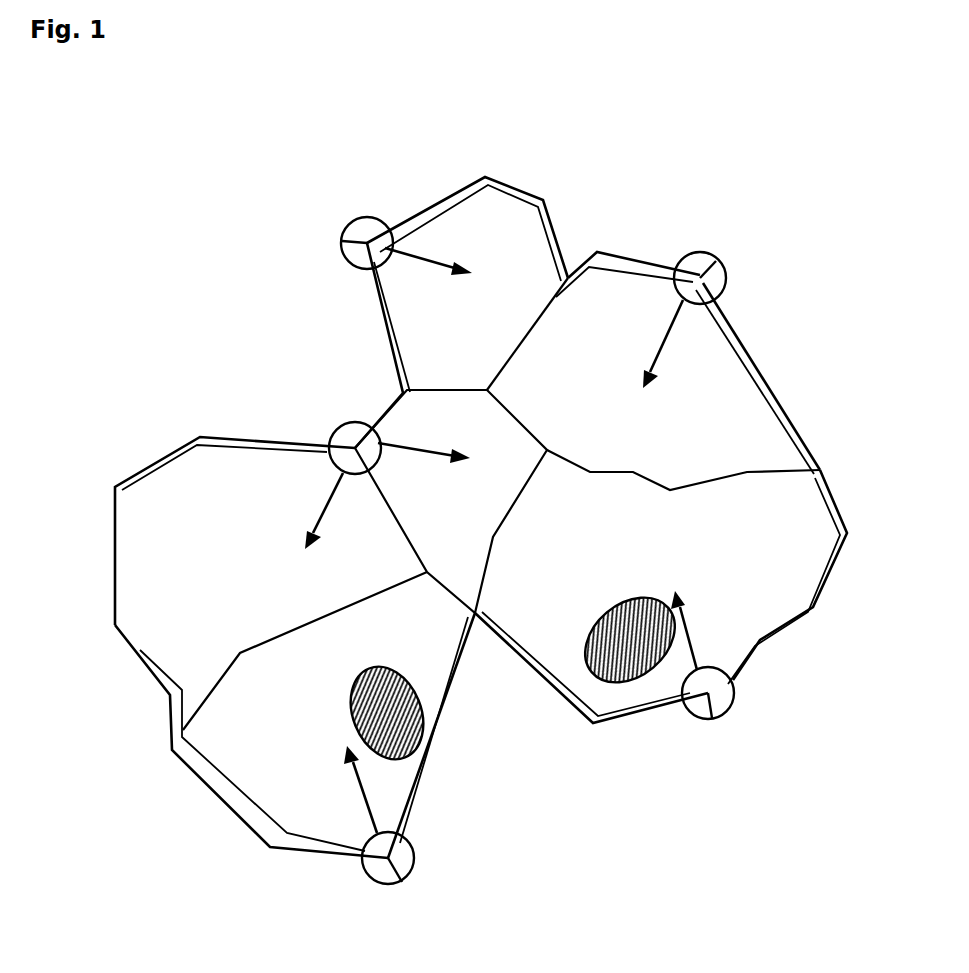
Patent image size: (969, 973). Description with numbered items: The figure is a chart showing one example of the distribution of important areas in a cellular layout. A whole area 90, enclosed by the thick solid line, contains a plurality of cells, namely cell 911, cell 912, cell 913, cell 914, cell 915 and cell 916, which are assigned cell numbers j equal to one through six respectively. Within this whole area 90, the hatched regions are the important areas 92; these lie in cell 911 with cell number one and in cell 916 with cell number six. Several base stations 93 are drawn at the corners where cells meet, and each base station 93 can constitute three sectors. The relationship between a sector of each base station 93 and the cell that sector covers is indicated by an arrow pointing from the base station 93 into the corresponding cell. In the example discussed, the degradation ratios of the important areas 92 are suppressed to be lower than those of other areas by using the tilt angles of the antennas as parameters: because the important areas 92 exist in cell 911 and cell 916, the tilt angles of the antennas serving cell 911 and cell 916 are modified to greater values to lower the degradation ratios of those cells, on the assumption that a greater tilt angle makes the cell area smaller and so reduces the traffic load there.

The whole area 90 is at (98, 460).
The cell 911 is at (773, 611).
The cell 912 is at (722, 362).
The cell 913 is at (463, 203).
The cell 914 is at (403, 413).
The cell 915 is at (183, 473).
The cell 916 is at (270, 820).
The important areas 92 is at (427, 720).
The base station 93 is at (342, 230).